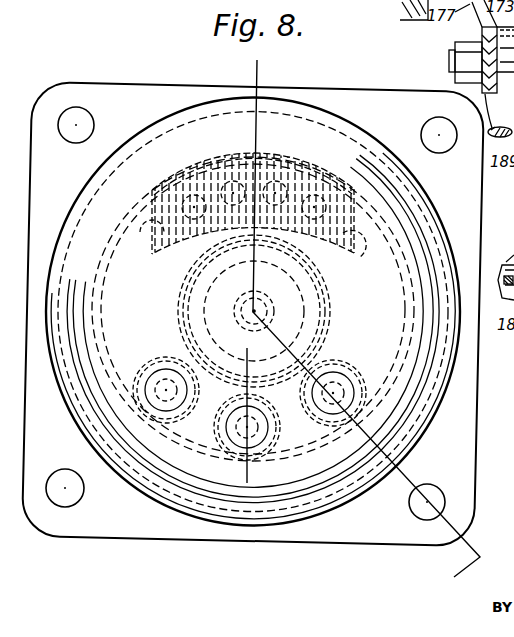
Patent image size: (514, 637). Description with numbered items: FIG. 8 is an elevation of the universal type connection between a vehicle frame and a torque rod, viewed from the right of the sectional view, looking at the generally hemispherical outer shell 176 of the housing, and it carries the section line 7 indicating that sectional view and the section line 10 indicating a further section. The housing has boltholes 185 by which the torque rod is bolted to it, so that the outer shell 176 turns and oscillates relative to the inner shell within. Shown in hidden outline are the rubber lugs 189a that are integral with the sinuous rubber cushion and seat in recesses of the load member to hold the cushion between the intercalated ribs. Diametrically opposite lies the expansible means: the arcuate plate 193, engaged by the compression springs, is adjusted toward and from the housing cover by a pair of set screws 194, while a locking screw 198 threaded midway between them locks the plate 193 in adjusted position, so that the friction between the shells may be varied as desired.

The outer shell 176 is at (326, 140).
The boltholes 185 is at (78, 108).
The rubber lugs 189a is at (213, 141).
The arcuate plate 193 is at (292, 435).
The set screws 194 is at (158, 369).
The locking screw 198 is at (258, 427).
The section line 10- 10 is at (247, 348).
The section line 7- 7 is at (257, 60).